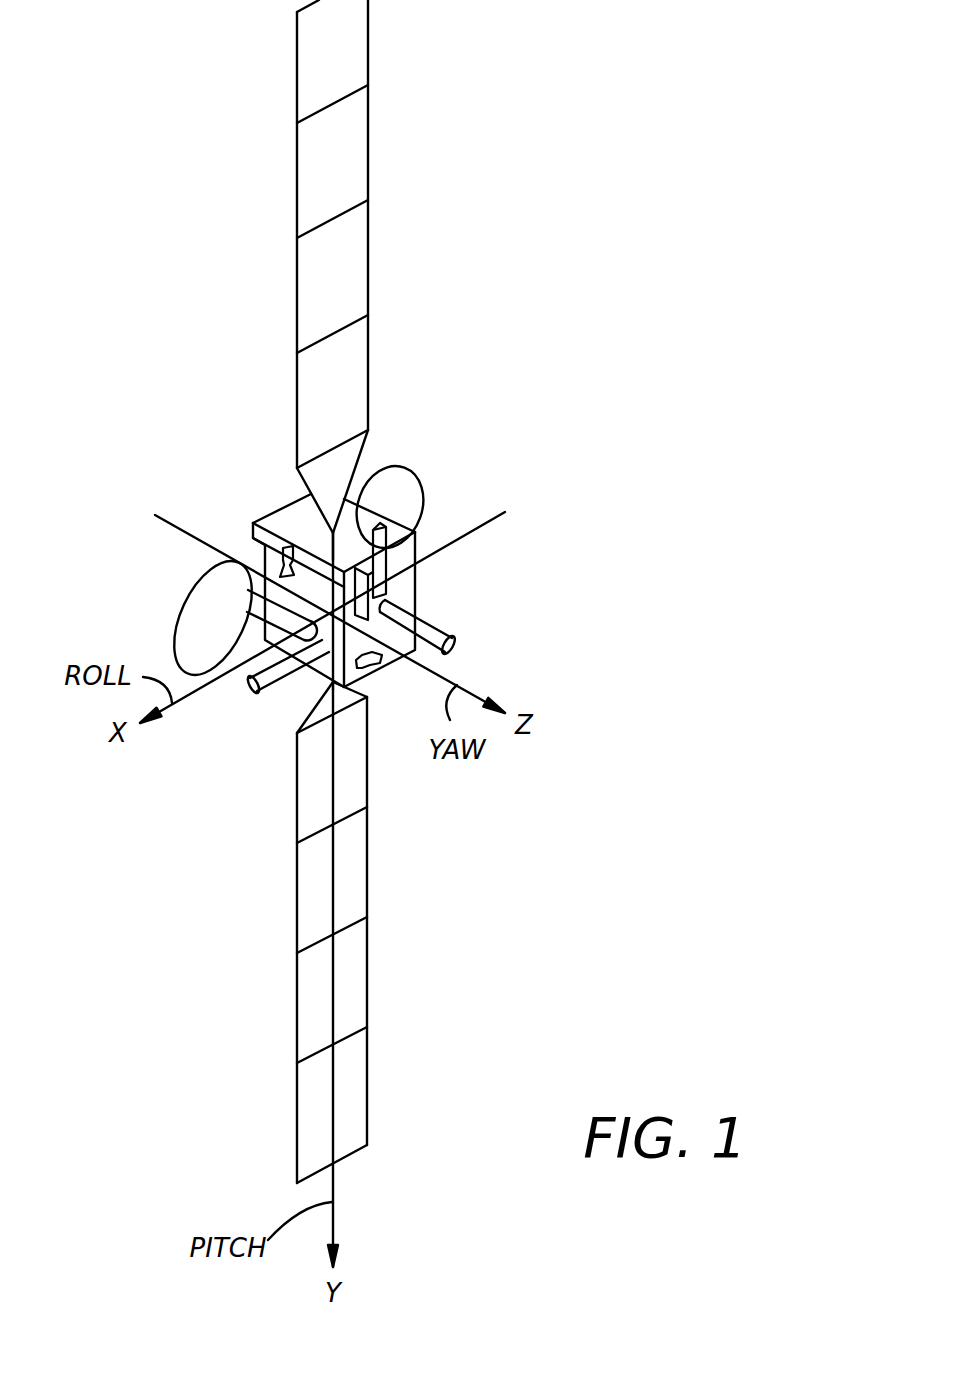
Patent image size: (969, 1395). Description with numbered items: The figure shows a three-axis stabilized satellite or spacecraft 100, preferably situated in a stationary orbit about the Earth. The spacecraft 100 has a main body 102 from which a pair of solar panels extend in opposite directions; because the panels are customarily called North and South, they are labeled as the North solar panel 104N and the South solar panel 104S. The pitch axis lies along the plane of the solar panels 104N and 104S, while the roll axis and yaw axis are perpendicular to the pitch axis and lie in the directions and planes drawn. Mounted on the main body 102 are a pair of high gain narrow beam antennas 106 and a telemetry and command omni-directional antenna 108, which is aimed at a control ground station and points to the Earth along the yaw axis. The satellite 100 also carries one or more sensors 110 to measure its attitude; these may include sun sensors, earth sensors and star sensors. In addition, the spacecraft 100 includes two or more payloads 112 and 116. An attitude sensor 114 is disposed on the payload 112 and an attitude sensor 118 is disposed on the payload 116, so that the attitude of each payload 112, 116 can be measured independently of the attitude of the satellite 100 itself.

The spacecraft 100 is at (450, 204).
The main body 102 is at (407, 592).
The North solar panel 104N is at (347, 154).
The South solar panel 104S is at (358, 980).
The high gain narrow beam antenna 106 is at (201, 601).
The telemetry and command omni-directional antenna 108 is at (447, 631).
The sensor 110 is at (286, 548).
The payload 112 is at (352, 503).
The attitude sensor 114 is at (423, 512).
The payload 116 is at (295, 668).
The attitude sensor 118 is at (260, 701).